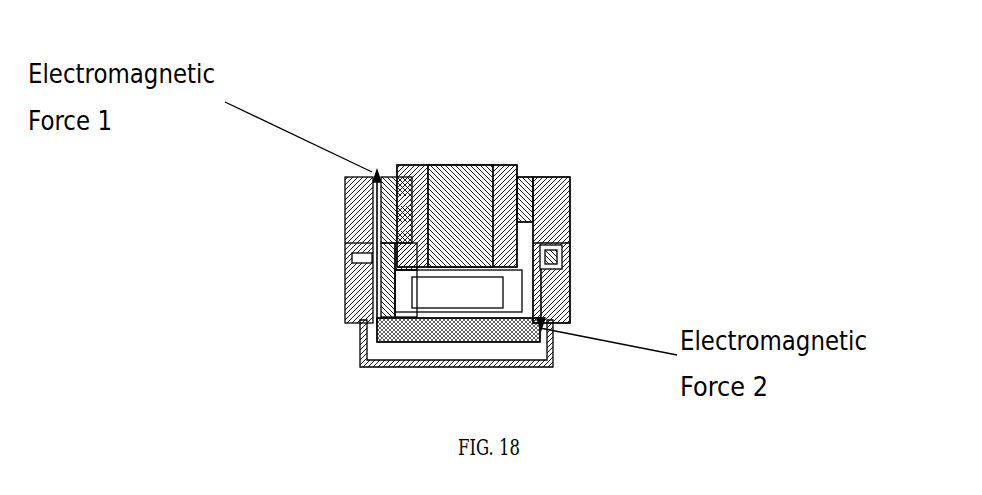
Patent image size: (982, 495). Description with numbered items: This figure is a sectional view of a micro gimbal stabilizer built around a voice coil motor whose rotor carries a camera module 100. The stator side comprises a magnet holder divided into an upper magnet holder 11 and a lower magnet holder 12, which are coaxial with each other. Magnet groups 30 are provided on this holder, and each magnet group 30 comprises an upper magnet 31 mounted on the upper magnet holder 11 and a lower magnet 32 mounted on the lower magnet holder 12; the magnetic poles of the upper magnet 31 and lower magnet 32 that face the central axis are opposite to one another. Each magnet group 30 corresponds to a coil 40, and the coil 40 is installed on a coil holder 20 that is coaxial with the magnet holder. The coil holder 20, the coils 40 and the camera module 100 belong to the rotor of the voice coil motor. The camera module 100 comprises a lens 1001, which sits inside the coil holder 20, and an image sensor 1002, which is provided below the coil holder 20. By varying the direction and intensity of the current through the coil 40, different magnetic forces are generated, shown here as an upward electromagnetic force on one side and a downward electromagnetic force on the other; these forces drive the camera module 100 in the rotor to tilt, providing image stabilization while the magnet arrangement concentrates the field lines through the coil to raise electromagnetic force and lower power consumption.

The upper magnet holder 11 is at (545, 190).
The lower magnet holder 12 is at (343, 315).
The coil holder 20 is at (535, 265).
The magnet group 30 is at (243, 230).
The upper magnet 31 is at (160, 248).
The lower magnet 32 is at (345, 193).
The coil 40 is at (537, 197).
The camera module 100 is at (602, 145).
The lens 1001 is at (473, 175).
The image sensor 1002 is at (385, 328).